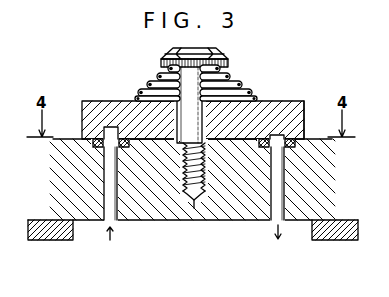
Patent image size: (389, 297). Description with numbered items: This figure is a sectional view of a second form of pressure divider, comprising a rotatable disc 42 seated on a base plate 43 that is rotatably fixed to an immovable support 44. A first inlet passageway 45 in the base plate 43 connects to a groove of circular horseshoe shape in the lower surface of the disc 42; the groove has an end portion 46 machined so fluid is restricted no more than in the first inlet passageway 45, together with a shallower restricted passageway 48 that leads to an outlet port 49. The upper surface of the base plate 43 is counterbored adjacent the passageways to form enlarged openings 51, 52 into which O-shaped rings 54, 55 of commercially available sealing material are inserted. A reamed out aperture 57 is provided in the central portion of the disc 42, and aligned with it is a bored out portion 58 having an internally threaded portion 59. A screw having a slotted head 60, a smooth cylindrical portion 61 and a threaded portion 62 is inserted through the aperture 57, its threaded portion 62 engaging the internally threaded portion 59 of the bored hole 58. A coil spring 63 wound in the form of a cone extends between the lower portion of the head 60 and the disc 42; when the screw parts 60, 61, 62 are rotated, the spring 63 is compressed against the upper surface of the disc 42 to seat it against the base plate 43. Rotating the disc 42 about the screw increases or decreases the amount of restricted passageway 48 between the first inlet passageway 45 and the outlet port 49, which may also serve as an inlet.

The rotatable disc 42 is at (299, 101).
The base plate 43 is at (312, 185).
The immovable support 44 is at (45, 240).
The first inlet passageway 45 is at (110, 193).
The groove end portion 46 is at (114, 127).
The restricted passageway 48 is at (280, 134).
The outlet port 49 is at (278, 200).
The enlarged opening 51 is at (96, 144).
The enlarged opening 52 is at (294, 145).
The O-shaped ring 54 is at (97, 142).
The O-shaped ring 55 is at (305, 113).
The reamed out aperture 57 is at (210, 123).
The bored out portion 58 is at (197, 206).
The internally threaded portion 59 is at (206, 172).
The slotted head 60 is at (218, 53).
The smooth cylindrical portion 61 is at (190, 114).
The threaded portion 62 is at (185, 168).
The coil spring 63 is at (231, 82).